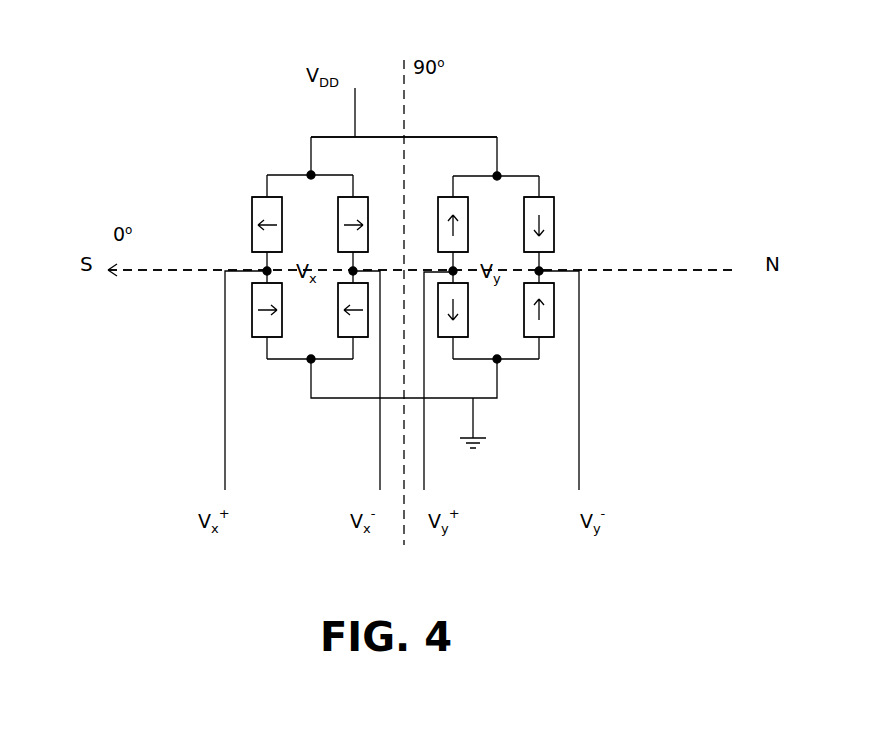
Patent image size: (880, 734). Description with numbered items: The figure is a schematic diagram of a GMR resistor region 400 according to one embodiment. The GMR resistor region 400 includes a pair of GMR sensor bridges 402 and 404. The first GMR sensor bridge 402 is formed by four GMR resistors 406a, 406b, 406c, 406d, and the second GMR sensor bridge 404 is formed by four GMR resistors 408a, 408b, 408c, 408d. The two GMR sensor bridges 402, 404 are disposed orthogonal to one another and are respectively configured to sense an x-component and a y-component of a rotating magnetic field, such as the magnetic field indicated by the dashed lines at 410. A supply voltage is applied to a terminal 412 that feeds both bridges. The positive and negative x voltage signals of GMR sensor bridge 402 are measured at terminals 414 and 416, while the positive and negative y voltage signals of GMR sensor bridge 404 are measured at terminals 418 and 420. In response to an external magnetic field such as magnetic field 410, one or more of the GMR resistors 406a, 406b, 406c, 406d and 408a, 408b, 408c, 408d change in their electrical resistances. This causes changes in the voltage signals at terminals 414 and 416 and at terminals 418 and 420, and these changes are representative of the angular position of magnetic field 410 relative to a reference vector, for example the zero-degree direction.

The GMR resistor region 400 is at (112, 98).
The GMR sensor bridge 402 is at (229, 189).
The GMR sensor bridge 404 is at (555, 163).
The GMR resistor 406a is at (252, 224).
The GMR resistor 406b is at (362, 197).
The GMR resistor 406c is at (262, 338).
The GMR resistor 406d is at (358, 338).
The GMR resistor 408a is at (445, 197).
The GMR resistor 408b is at (543, 197).
The GMR resistor 408c is at (446, 338).
The GMR resistor 408d is at (544, 338).
The magnetic field 410 is at (655, 272).
The terminal 412 is at (470, 137).
The terminal 414 is at (225, 430).
The terminal 416 is at (380, 435).
The terminal 418 is at (424, 468).
The terminal 420 is at (579, 455).